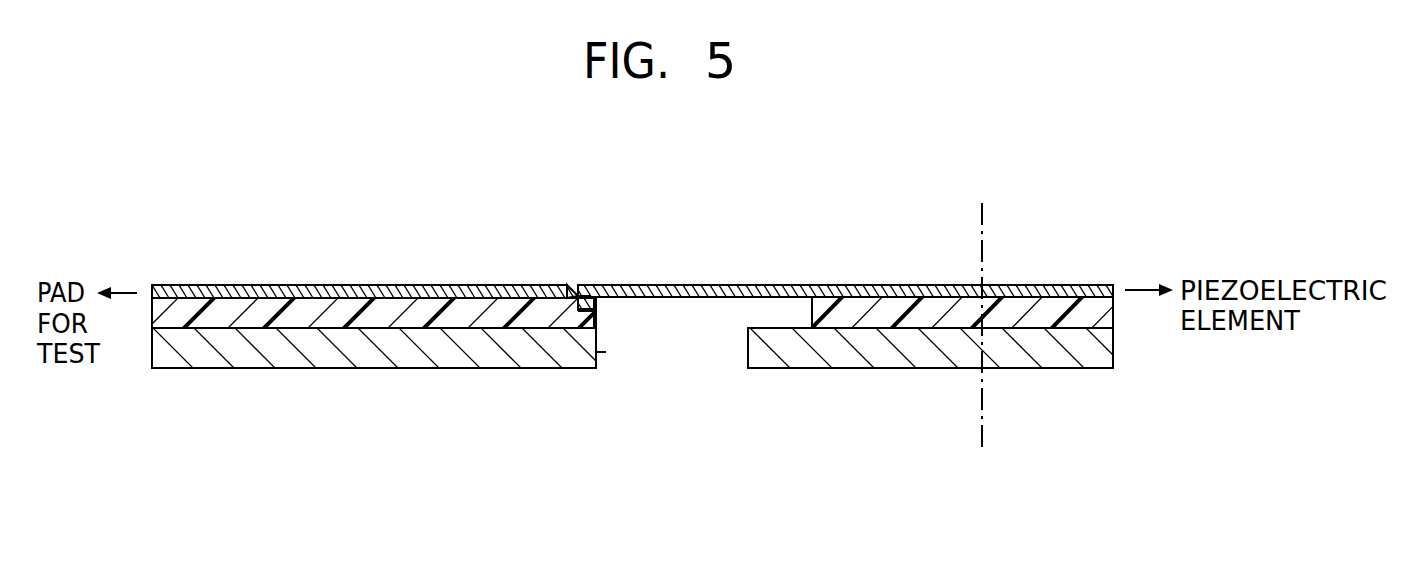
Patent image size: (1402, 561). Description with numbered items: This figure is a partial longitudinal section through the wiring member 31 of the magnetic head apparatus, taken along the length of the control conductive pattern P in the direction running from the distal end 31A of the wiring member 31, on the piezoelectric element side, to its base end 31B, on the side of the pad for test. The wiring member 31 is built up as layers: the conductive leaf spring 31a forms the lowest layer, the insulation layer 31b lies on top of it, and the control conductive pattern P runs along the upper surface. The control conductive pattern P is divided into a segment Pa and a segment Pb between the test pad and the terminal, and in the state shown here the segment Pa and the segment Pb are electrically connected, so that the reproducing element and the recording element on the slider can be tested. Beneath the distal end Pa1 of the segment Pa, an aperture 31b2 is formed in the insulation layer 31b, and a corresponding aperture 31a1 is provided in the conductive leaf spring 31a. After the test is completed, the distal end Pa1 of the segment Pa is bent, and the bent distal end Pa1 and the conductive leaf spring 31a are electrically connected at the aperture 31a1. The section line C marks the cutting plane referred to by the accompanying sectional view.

The wiring member 31 is at (329, 278).
The conductive leaf spring 31a is at (503, 350).
The aperture in conductive leaf spring 31a1 is at (604, 352).
The insulation layer 31b is at (413, 317).
The aperture in insulation layer 31b2 is at (812, 311).
The distal end of wiring member 31A is at (1043, 258).
The base end of wiring member 31B is at (233, 264).
The control conductive pattern P is at (832, 285).
The segment of control conductive pattern Pa is at (915, 285).
The distal end of segment Pa Pa1 is at (697, 285).
The segment of control conductive pattern Pb is at (480, 285).
The section line C- C is at (982, 325).